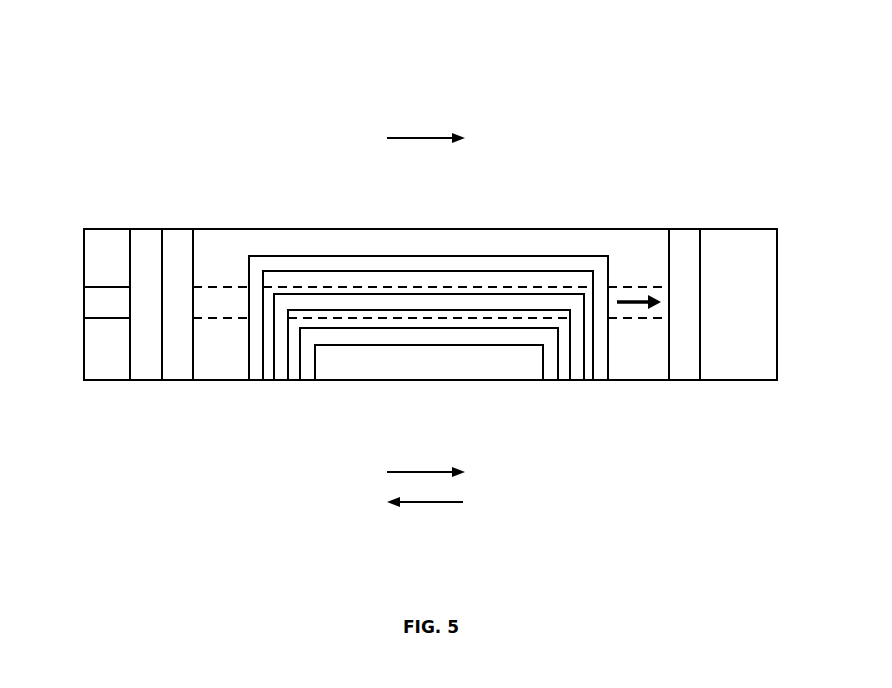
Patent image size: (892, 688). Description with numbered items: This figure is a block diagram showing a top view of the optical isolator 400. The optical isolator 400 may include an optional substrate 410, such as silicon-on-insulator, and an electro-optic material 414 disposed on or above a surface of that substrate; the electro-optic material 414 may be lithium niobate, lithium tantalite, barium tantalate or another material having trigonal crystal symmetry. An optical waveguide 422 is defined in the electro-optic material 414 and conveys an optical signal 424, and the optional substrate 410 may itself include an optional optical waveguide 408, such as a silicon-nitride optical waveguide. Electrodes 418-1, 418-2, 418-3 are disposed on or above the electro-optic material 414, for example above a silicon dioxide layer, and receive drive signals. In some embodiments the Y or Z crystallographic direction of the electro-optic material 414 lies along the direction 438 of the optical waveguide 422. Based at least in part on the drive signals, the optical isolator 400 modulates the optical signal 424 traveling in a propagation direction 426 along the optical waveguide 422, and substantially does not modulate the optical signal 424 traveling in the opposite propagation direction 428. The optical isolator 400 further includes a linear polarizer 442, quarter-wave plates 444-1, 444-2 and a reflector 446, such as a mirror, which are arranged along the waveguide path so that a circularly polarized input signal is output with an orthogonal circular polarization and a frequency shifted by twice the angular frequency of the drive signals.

The optical isolator 400 is at (227, 65).
The substrate 410 is at (106, 255).
The optical waveguide 408 is at (116, 302).
The linear polarizer 442 is at (142, 260).
The quarter-wave plate 444-1 is at (178, 355).
The quarter-wave plate 444-2 is at (684, 343).
The electro-optic material 414 is at (223, 249).
The optical waveguide 422 is at (625, 293).
The electrode 418-1 is at (283, 265).
The electrode 418-2 is at (435, 303).
The electrode 418-3 is at (475, 337).
The optical signal 424 is at (637, 306).
The reflector 446 is at (746, 333).
The direction 438 is at (427, 135).
The propagation direction 426 is at (432, 472).
The propagation direction 428 is at (422, 502).